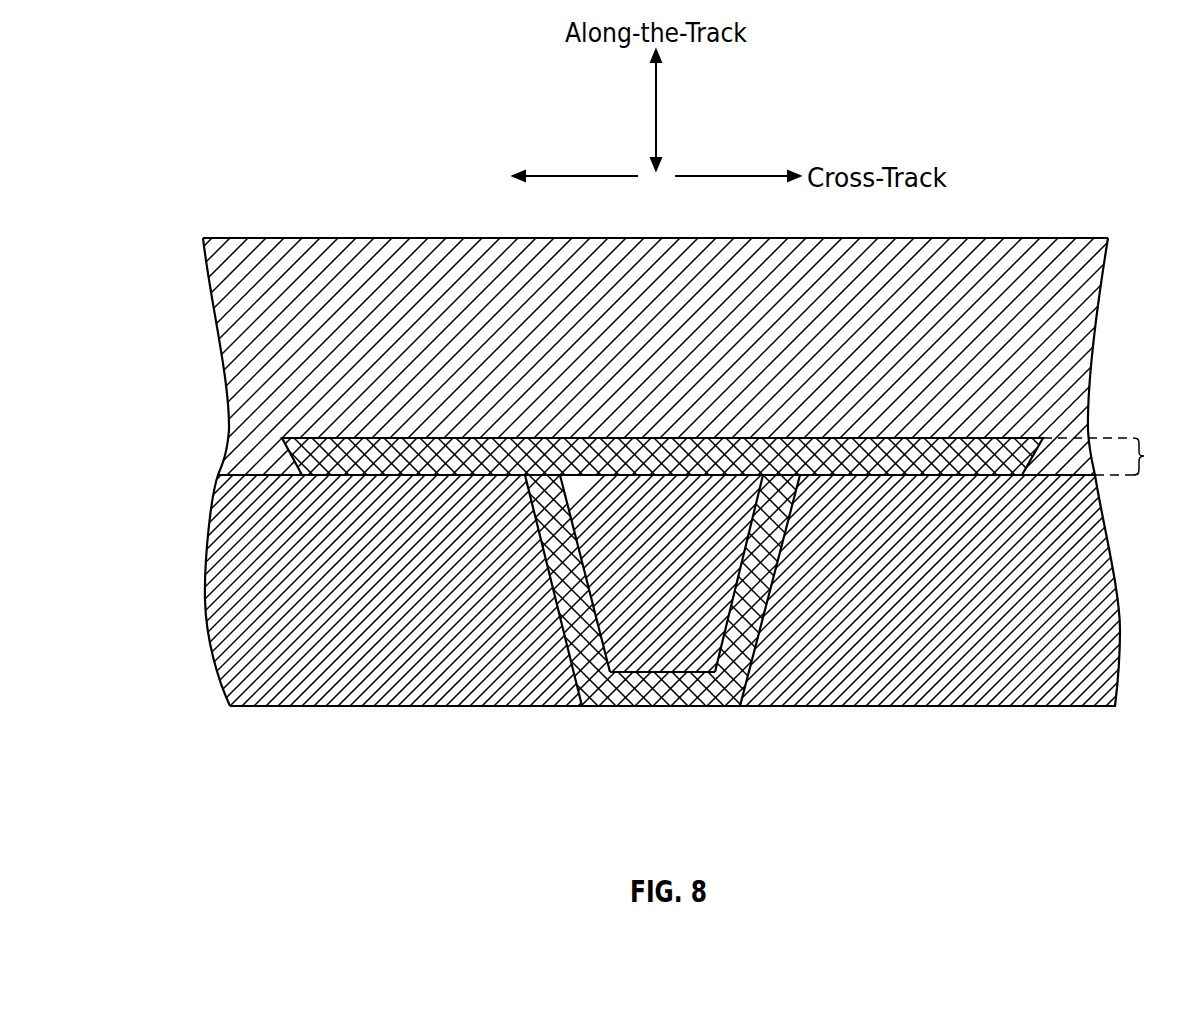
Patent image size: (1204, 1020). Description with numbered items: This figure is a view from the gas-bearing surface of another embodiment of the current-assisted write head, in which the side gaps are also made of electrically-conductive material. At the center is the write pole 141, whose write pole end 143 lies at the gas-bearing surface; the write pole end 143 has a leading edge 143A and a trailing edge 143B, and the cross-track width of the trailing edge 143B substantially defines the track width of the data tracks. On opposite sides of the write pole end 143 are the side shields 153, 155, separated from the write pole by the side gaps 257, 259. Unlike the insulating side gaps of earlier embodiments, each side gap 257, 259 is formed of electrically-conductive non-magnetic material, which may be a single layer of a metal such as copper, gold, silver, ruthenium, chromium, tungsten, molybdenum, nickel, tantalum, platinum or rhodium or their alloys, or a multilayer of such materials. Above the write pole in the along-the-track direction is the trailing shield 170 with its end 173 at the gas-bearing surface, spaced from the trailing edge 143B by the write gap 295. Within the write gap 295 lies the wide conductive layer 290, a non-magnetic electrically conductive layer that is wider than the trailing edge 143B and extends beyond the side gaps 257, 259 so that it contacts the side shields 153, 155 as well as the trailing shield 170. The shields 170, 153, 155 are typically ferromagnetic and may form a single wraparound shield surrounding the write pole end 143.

The trailing shield 170 is at (990, 238).
The end of trailing shield 173 is at (1070, 297).
The wide conductive layer 290 is at (702, 450).
The write gap 295 is at (1115, 456).
The trailing edge of write pole end 143B is at (692, 477).
The write pole 141 is at (572, 537).
The side gap 259 is at (572, 617).
The side gap 257 is at (753, 605).
The side shield 155 is at (245, 632).
The side shield 153 is at (1097, 600).
The leading edge of write pole end 143A is at (632, 673).
The write pole end 143 is at (666, 640).